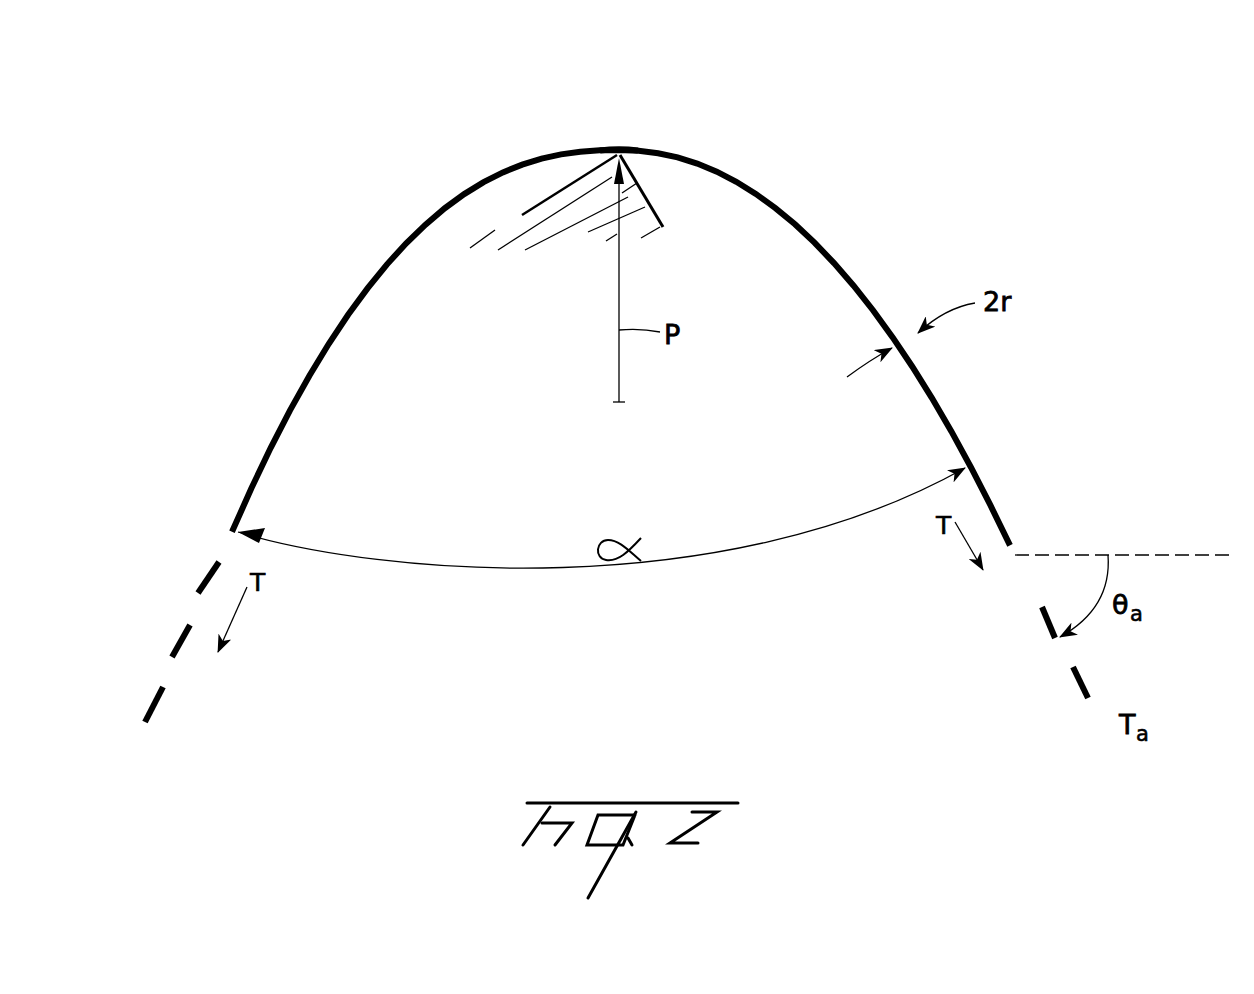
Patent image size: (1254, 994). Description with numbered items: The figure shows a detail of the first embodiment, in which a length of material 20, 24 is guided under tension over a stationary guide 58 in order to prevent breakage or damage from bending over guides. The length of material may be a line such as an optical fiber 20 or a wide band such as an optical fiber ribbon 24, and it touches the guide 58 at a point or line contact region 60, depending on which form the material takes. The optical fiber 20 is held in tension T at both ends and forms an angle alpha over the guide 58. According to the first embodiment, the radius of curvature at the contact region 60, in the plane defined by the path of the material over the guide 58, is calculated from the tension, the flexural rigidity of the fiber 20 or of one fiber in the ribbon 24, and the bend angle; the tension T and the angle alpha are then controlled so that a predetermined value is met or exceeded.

The contact region 60 is at (626, 136).
The stationary guide 58 is at (653, 207).
The optical fiber 20 is at (631, 436).
The optical fiber ribbon 24 is at (943, 400).